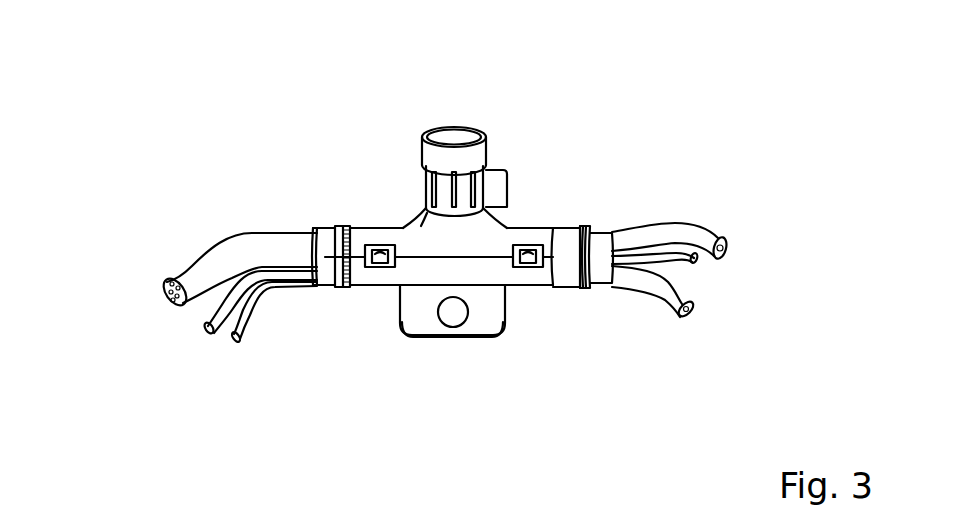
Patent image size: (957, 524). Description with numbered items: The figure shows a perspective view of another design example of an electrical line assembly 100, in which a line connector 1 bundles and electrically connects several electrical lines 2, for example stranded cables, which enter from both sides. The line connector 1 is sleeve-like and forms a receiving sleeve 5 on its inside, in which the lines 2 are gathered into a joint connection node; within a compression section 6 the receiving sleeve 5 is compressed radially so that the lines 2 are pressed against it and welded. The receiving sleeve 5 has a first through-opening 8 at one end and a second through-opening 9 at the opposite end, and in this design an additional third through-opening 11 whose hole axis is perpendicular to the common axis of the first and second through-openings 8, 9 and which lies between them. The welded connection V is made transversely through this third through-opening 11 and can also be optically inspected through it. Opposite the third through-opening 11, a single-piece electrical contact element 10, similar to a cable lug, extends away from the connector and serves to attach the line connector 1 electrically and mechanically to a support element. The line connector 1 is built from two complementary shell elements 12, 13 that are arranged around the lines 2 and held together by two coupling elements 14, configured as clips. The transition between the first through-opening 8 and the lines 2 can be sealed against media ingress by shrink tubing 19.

The electrical line assembly 100 is at (263, 88).
The line connector 1 is at (398, 146).
The welded connection V is at (452, 125).
The third through-opening 11 is at (485, 136).
The compression section 6 is at (507, 188).
The shell element 12 is at (383, 242).
The shell element 13 is at (388, 280).
The coupling element 14 is at (380, 265).
The first through-opening 8 is at (317, 263).
The receiving sleeve 5 is at (548, 237).
The shrink tubing 19 is at (580, 232).
The second through-opening 9 is at (597, 233).
The electrical contact element 10 is at (483, 305).
The electrical lines 2 is at (165, 279).